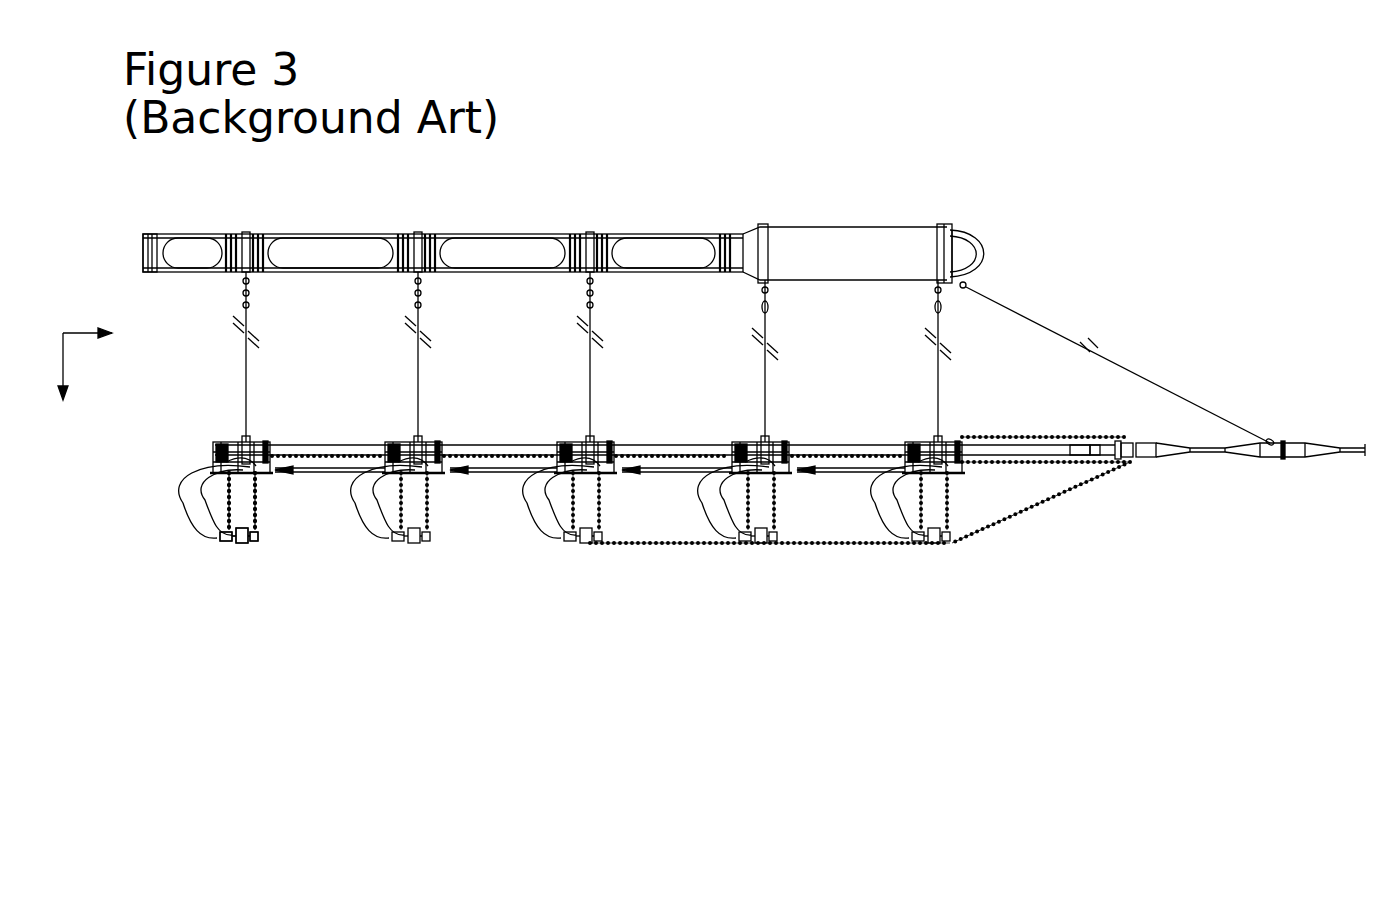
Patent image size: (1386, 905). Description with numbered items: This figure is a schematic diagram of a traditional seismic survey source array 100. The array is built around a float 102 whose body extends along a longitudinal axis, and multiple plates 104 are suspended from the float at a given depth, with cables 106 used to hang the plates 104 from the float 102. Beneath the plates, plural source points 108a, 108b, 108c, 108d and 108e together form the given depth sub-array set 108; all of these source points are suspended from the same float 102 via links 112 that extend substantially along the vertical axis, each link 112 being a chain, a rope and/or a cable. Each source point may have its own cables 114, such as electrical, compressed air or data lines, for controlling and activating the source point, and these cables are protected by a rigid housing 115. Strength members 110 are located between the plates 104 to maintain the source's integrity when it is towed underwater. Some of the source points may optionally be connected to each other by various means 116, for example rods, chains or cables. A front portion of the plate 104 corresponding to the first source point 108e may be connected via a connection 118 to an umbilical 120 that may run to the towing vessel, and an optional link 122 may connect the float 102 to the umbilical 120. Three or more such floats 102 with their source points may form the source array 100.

The source array 100 is at (640, 135).
The float 102 is at (530, 252).
The plates 104 is at (243, 455).
The cables 106 is at (591, 378).
The given depth sub-array set 108 is at (222, 548).
The source point 108a is at (258, 541).
The source point 108b is at (430, 542).
The source point 108c is at (588, 548).
The source point 108d is at (762, 548).
The first source point 108e is at (940, 548).
The strength members 110 is at (322, 463).
The links 112 is at (426, 488).
The cables 114 is at (184, 490).
The rigid housing 115 is at (657, 445).
The connecting means 116 is at (650, 546).
The connection 118 is at (1018, 437).
The umbilical 120 is at (1255, 458).
The link 122 is at (1009, 308).